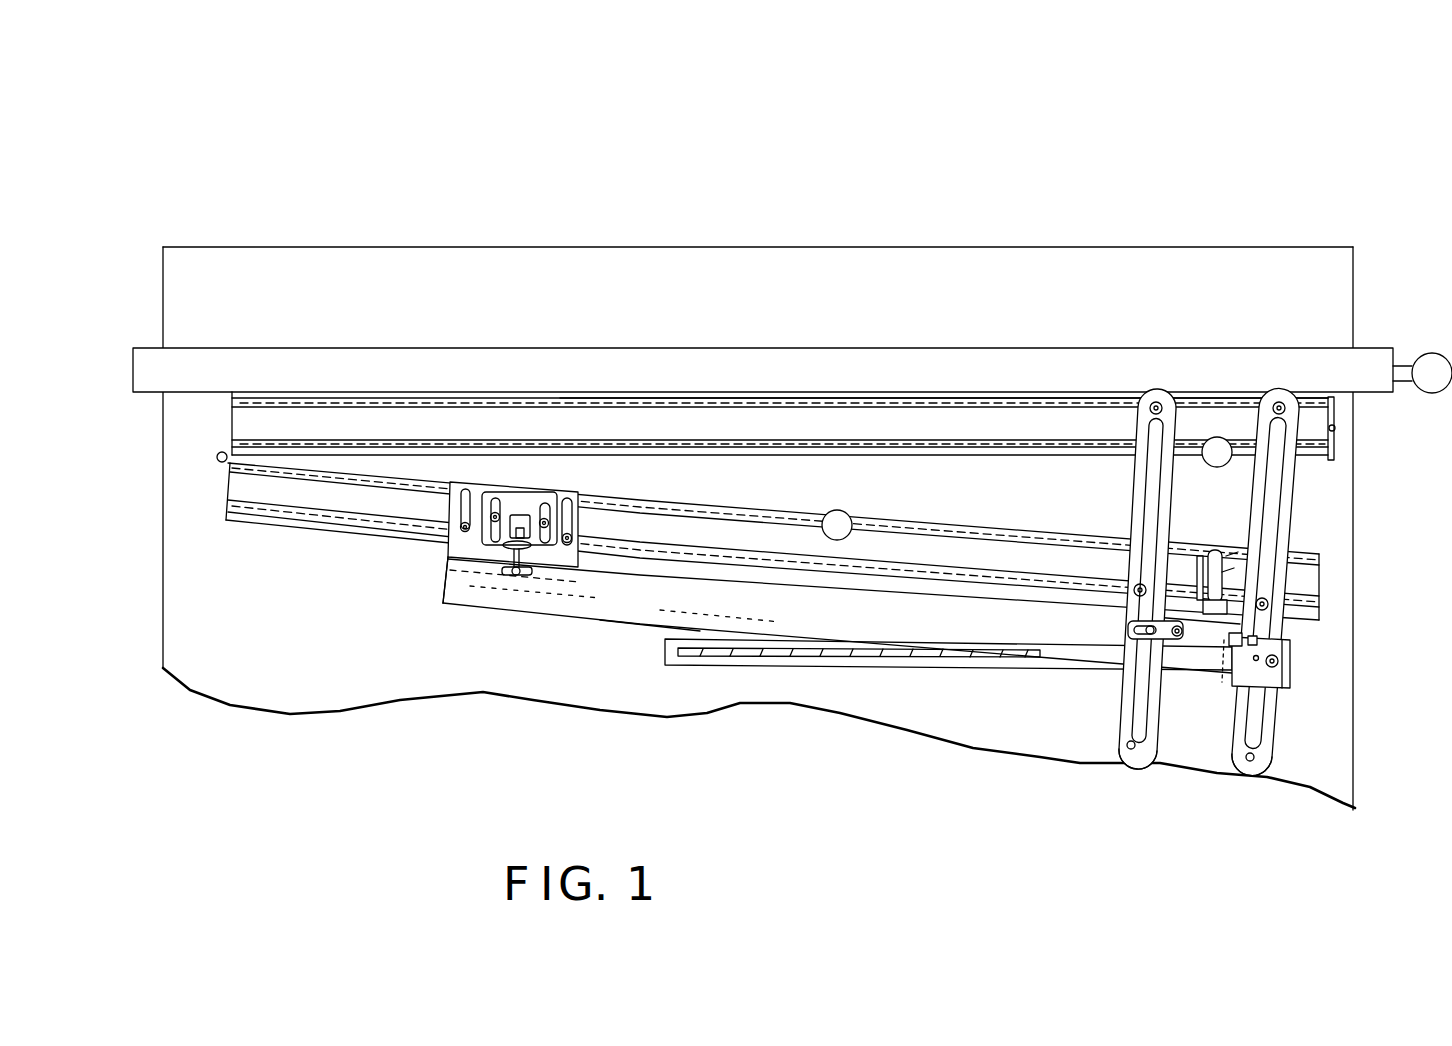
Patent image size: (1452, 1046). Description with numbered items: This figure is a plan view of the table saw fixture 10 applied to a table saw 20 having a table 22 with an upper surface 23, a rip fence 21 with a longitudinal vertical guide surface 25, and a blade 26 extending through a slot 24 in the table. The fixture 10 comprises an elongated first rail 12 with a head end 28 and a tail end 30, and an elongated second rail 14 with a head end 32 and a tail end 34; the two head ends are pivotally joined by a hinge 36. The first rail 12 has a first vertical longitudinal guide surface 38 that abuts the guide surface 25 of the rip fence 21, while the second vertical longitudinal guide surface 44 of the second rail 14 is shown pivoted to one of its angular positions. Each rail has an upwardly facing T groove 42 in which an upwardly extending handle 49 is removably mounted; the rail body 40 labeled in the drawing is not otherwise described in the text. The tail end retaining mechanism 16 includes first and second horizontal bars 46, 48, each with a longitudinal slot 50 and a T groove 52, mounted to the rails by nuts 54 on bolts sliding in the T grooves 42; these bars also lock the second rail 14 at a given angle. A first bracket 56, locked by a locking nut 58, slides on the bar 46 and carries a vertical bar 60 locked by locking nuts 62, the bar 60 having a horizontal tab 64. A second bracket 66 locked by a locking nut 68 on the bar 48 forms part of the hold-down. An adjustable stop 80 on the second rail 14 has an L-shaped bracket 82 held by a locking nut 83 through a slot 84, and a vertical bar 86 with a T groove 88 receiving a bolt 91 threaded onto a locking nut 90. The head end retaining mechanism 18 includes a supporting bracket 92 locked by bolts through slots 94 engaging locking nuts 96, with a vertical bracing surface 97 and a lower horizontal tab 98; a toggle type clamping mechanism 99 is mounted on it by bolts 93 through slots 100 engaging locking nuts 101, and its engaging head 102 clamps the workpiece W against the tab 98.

The table saw fixture 10 is at (1150, 181).
The first rail 12 is at (820, 328).
The second rail 14 is at (335, 550).
The tail end retaining mechanism 16 is at (1331, 655).
The head end retaining mechanism 18 is at (511, 522).
The table saw 20 is at (1302, 237).
The rip fence 21 is at (1367, 360).
The table 22 is at (1215, 258).
The upper surface 23 is at (1213, 311).
The slot 24 is at (843, 667).
The longitudinal vertical guide surface 25 is at (1380, 397).
The blade 26 is at (742, 652).
The head end 28 is at (243, 402).
The tail end 30 is at (1334, 447).
The head end 32 is at (253, 498).
The tail end 34 is at (1317, 562).
The hinge 36 is at (217, 457).
The first vertical longitudinal guide surface 38 is at (660, 393).
The track body 40 is at (453, 413).
The T groove 42 is at (617, 437).
The second vertical longitudinal guide surface 44 is at (307, 528).
The first horizontal bar 46 is at (1260, 777).
The second horizontal bar 48 is at (1138, 757).
The handle 49 is at (1218, 437).
The longitudinal slot 50 is at (1257, 745).
The T groove 52 is at (1272, 731).
The nut 54 is at (1155, 402).
The first bracket 56 is at (1283, 680).
The locking nut 58 is at (1283, 660).
The vertical bar 60 is at (1243, 632).
The locking nut 62 is at (1283, 637).
The horizontal tab 64 is at (1220, 683).
The second bracket 66 is at (1128, 638).
The locking nut 68 is at (1150, 637).
The adjustable stop 80 is at (1254, 538).
The L-shaped bracket 82 is at (1225, 573).
The locking nut 83 is at (1232, 552).
The slot 84 is at (1217, 545).
The vertical bar 86 is at (1130, 623).
The T groove 88 is at (1148, 580).
The locking nut 90 is at (1200, 553).
The bolt 91 is at (1175, 603).
The supporting bracket 92 is at (477, 480).
The bolt 93 is at (500, 515).
The slot 94 is at (460, 493).
The locking nut 96 is at (462, 522).
The vertical bracing surface 97 is at (470, 565).
The lower horizontal tab 98 is at (448, 568).
The toggle type clamping mechanism 99 is at (521, 472).
The slot 100 is at (543, 527).
The locking nut 101 is at (547, 523).
The engaging head 102 is at (500, 572).
The workpiece W is at (645, 620).